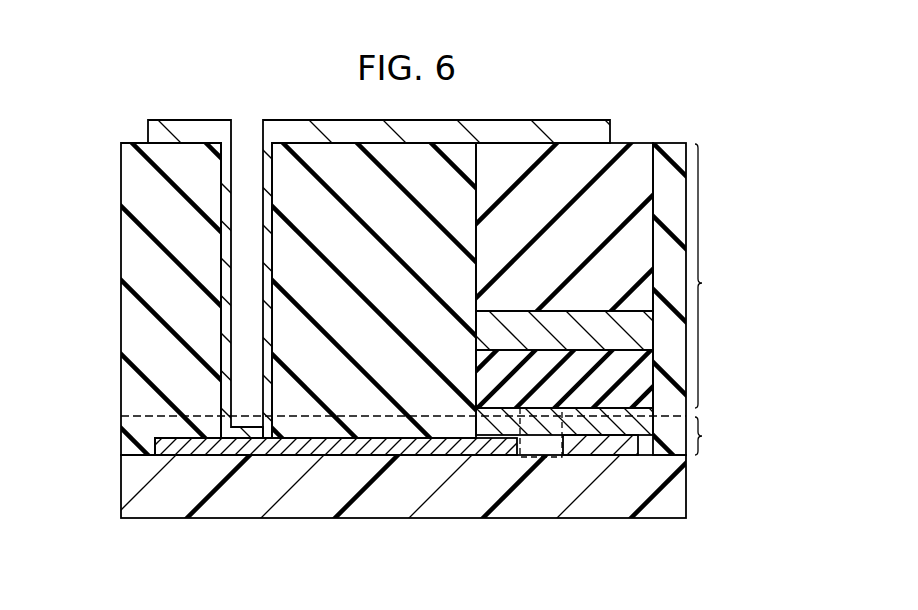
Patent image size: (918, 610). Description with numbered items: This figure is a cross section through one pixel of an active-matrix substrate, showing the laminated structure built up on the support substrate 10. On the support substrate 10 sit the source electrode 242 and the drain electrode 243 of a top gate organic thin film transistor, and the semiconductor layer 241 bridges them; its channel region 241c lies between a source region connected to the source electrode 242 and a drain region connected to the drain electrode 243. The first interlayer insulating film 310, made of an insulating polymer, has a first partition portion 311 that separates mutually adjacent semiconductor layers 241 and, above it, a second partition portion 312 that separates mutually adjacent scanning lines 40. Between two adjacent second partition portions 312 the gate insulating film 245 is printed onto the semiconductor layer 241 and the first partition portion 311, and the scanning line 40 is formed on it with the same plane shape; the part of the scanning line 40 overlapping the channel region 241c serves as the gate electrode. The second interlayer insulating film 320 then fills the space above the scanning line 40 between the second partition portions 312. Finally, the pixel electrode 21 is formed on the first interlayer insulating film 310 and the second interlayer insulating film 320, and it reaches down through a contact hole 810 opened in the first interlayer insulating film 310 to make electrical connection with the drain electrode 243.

The support substrate 10 is at (672, 490).
The pixel electrode 21 is at (491, 126).
The scanning line 40 is at (600, 332).
The semiconductor layer 241 is at (483, 453).
The channel region 241c is at (545, 458).
The source electrode 242 is at (588, 446).
The drain electrode 243 is at (295, 448).
The gate insulating film 245 is at (627, 387).
The first interlayer insulating film 310 is at (137, 259).
The first partition portion 311 is at (434, 435).
The second partition portion 312 is at (721, 276).
The second interlayer insulating film 320 is at (617, 152).
The contact hole 810 is at (264, 250).